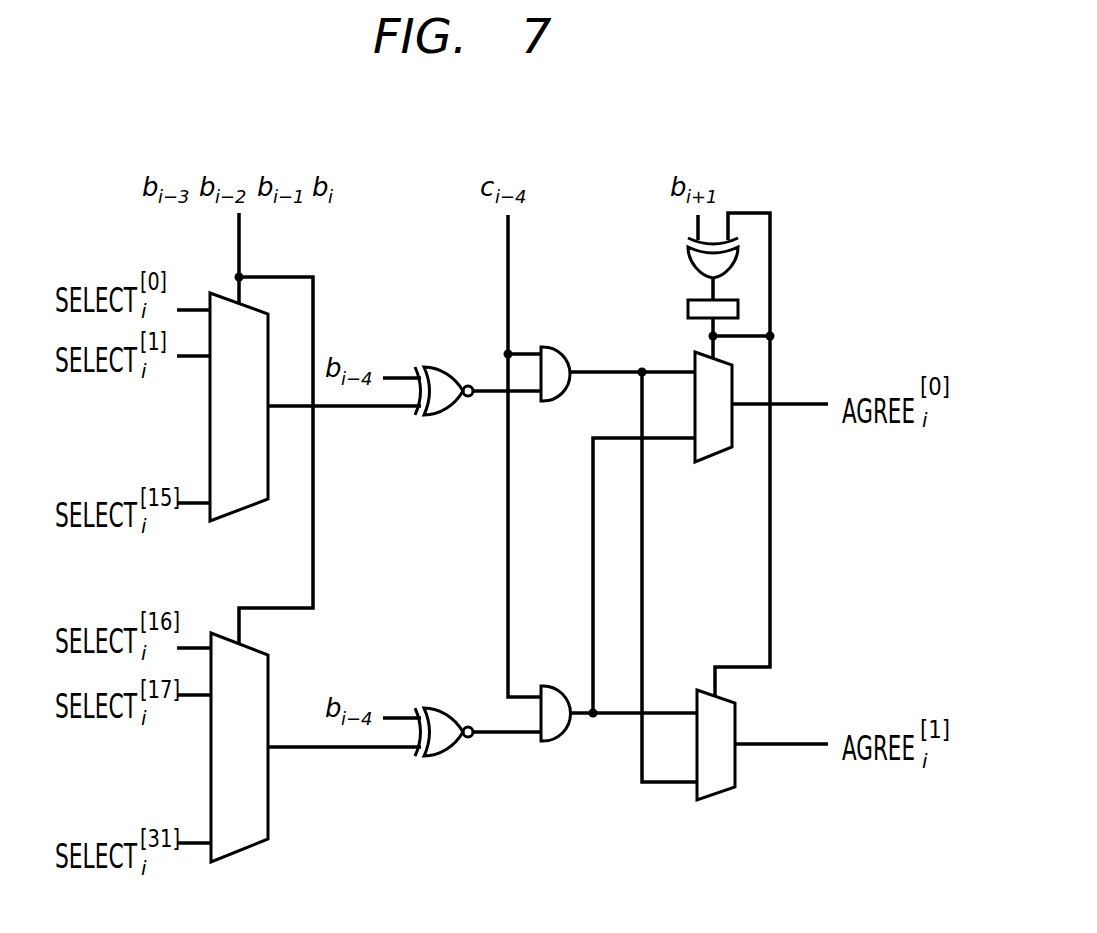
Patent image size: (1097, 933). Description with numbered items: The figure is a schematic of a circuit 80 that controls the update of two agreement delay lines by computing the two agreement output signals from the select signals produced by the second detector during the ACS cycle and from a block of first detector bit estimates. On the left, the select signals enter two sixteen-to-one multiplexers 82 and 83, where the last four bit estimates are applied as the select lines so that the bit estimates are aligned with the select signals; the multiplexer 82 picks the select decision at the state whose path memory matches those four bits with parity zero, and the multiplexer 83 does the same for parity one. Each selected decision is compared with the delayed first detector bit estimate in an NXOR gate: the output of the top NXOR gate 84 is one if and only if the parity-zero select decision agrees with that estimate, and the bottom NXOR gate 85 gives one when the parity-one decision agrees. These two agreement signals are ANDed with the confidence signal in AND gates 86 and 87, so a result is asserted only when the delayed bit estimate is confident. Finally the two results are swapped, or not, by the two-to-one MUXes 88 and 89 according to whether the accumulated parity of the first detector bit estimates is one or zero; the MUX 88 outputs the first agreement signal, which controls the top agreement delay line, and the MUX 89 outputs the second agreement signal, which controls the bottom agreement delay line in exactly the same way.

The agreement detection circuit 80 is at (871, 222).
The multiplexer 82 is at (210, 424).
The multiplexer 83 is at (210, 766).
The top NXOR gate 84 is at (430, 367).
The bottom NXOR gate 85 is at (437, 757).
The AND gate 86 is at (556, 347).
The AND gate 87 is at (565, 742).
The MUX 88 is at (718, 463).
The MUX 89 is at (718, 801).